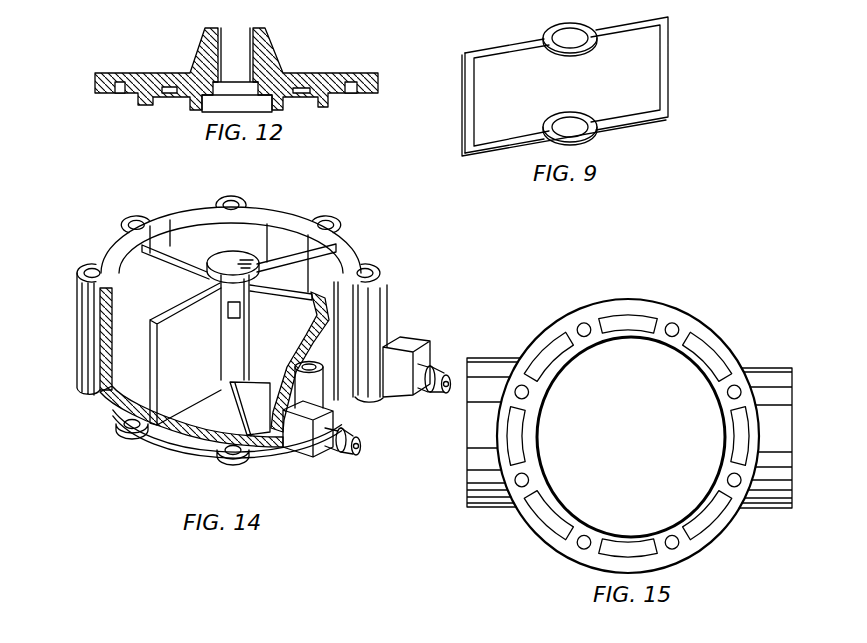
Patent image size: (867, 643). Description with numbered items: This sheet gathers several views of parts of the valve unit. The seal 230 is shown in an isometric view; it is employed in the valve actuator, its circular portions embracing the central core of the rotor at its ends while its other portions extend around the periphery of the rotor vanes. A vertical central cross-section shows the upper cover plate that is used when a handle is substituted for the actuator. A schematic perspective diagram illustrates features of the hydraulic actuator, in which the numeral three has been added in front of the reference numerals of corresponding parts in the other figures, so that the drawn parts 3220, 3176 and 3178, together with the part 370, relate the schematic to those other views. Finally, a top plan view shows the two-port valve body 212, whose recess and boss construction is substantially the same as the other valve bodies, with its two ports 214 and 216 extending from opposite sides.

In FIG. 9, the seal 230 is at (670, 62).
In FIG. 14, the partition wall 370 is at (178, 305).
In FIG. 14, the central hub cap 3220 is at (234, 302).
In FIG. 14, the partition plate 3176 is at (290, 308).
In FIG. 14, the floor segment 3178 is at (250, 402).
In FIG. 15, the valve body 212 is at (700, 322).
In FIG. 15, the port 214 is at (468, 477).
In FIG. 15, the port 216 is at (793, 389).